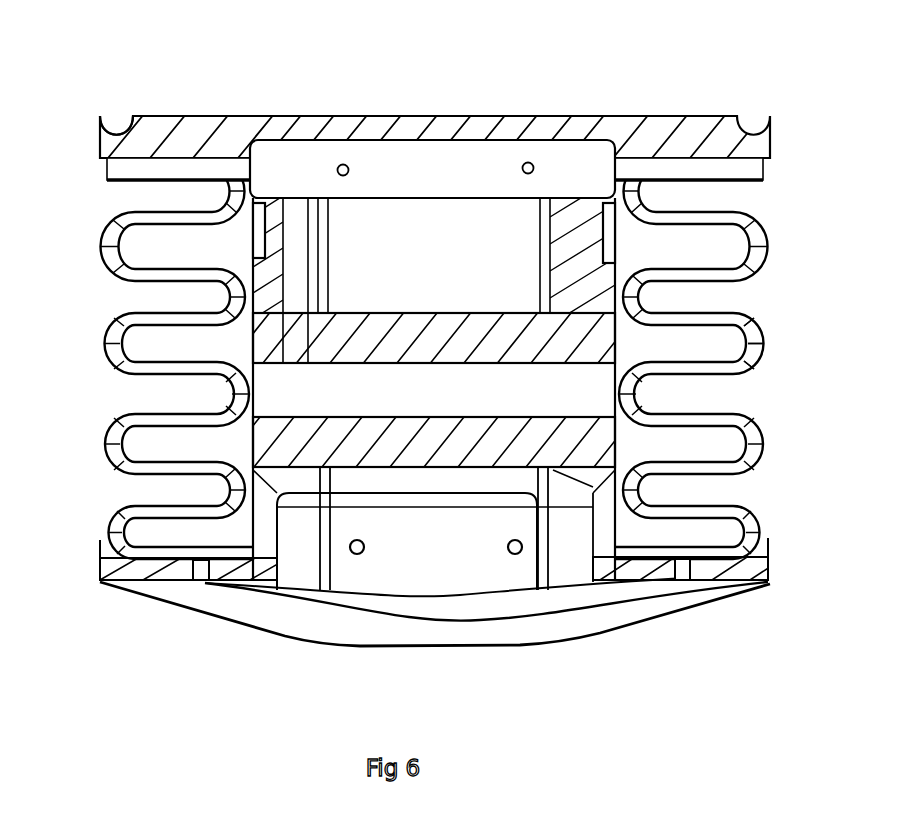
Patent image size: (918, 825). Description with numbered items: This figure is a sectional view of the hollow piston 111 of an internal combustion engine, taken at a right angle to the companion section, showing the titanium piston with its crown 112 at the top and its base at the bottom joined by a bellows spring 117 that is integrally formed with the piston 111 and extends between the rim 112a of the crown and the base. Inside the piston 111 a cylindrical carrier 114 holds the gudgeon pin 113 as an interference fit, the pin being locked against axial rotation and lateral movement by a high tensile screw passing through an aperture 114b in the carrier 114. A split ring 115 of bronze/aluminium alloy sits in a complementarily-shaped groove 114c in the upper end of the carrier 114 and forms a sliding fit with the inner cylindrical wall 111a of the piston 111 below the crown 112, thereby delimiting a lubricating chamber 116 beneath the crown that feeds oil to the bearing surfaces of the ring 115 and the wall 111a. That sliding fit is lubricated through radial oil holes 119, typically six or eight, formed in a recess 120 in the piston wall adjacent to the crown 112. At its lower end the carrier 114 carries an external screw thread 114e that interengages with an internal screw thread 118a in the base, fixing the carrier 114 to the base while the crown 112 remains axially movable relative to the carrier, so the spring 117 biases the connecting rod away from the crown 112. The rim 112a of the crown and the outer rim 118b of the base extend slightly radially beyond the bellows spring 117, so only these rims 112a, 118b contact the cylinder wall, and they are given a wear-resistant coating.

The hollow piston 111 is at (120, 97).
The inner cylindrical wall 111a is at (330, 115).
The crown 112 is at (203, 140).
The rim 112a is at (95, 140).
The gudgeon pin 113 is at (453, 443).
The cylindrical carrier 114 is at (275, 486).
The aperture 114b is at (297, 218).
The groove 114c is at (590, 228).
The external screw thread 114e is at (200, 580).
The split ring 115 is at (756, 229).
The lubricating chamber 116 is at (445, 167).
The bellows spring 117 is at (742, 375).
The internal screw thread 118a is at (684, 578).
The outer rim of the base 118b is at (770, 558).
The radial oil holes 119 is at (533, 167).
The recess 120 is at (775, 158).